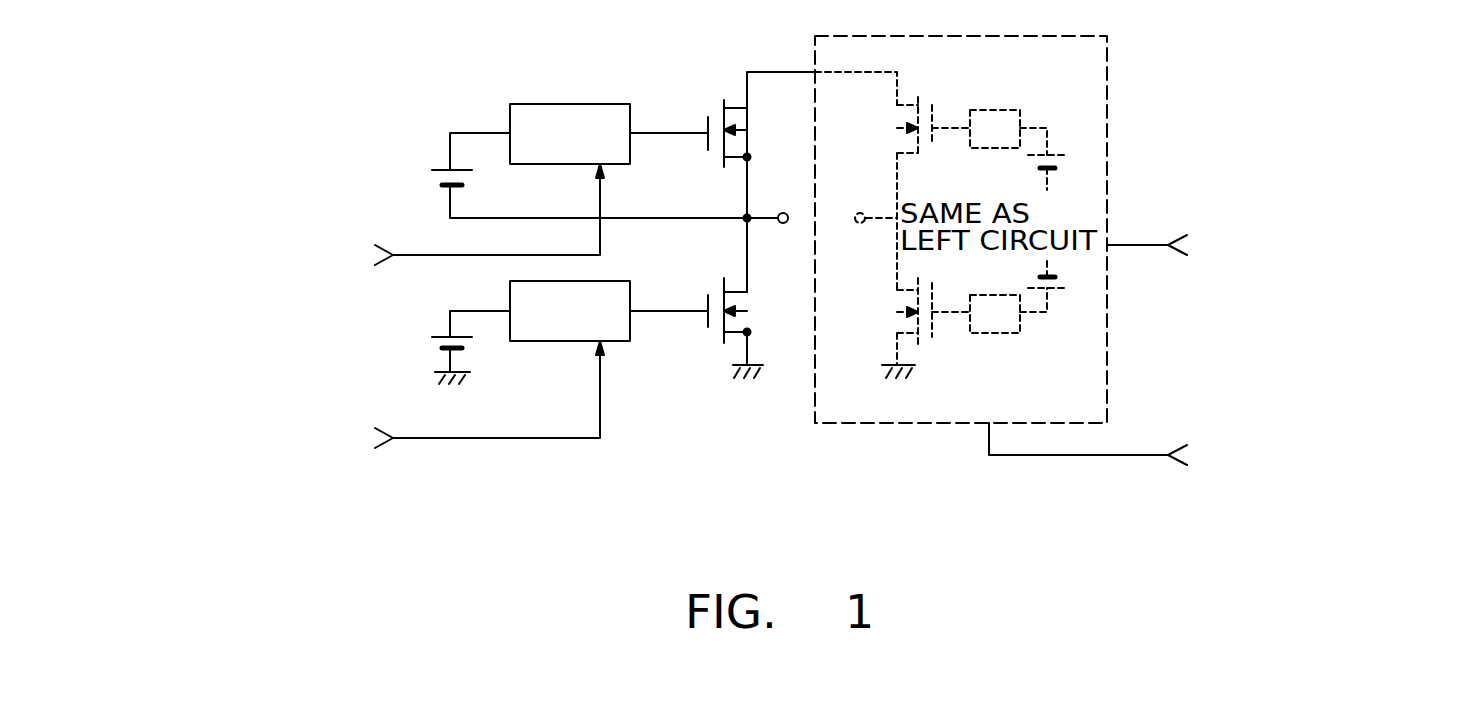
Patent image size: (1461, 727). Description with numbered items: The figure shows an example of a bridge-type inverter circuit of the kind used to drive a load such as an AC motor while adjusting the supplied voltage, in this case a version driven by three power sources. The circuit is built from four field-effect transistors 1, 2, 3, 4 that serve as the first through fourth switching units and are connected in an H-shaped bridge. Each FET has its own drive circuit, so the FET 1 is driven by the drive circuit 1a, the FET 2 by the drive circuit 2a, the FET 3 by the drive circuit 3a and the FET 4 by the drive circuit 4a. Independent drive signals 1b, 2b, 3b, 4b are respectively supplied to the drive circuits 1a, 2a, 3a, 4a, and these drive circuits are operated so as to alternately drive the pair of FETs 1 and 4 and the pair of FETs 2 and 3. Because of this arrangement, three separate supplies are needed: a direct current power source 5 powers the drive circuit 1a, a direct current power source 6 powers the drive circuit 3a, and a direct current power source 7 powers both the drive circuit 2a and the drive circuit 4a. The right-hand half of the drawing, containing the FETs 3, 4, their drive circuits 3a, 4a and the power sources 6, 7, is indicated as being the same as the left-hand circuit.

The field-effect transistor 1 is at (753, 125).
The drive circuit 1a is at (548, 104).
The drive signal 1b is at (357, 217).
The field-effect transistor 2 is at (757, 302).
The drive circuit 2a is at (615, 281).
The drive signal 2b is at (357, 396).
The field-effect transistor 3 is at (938, 103).
The drive circuit 3a is at (1010, 112).
The drive signal 3b is at (1278, 245).
The field-effect transistor 4 is at (938, 340).
The drive circuit 4a is at (1010, 333).
The drive signal 4b is at (1222, 447).
The direct current power source 5 is at (474, 175).
The direct current power source 6 is at (1072, 163).
The direct current power source 7 is at (477, 350).